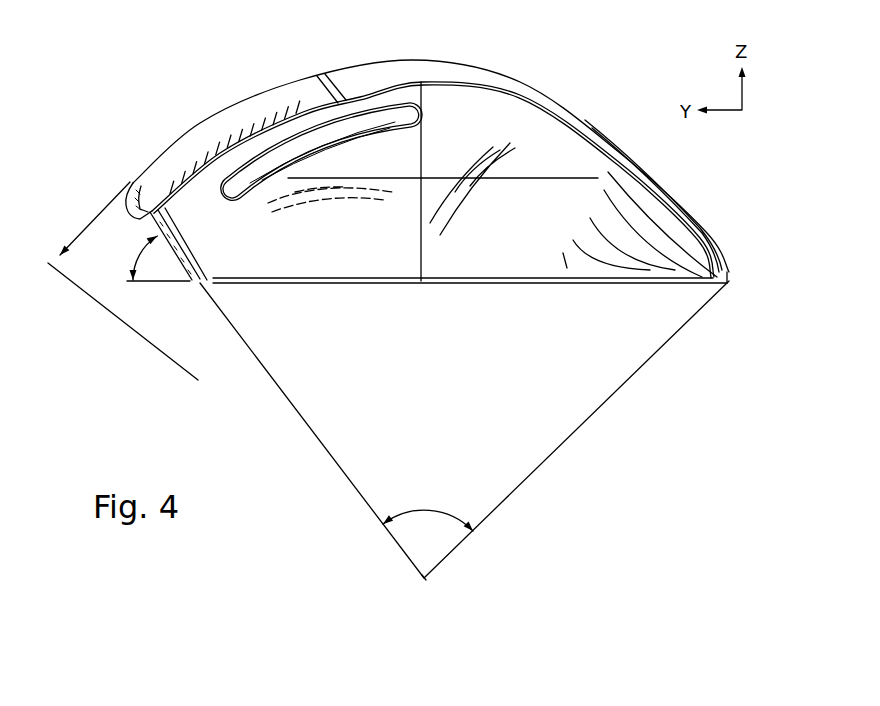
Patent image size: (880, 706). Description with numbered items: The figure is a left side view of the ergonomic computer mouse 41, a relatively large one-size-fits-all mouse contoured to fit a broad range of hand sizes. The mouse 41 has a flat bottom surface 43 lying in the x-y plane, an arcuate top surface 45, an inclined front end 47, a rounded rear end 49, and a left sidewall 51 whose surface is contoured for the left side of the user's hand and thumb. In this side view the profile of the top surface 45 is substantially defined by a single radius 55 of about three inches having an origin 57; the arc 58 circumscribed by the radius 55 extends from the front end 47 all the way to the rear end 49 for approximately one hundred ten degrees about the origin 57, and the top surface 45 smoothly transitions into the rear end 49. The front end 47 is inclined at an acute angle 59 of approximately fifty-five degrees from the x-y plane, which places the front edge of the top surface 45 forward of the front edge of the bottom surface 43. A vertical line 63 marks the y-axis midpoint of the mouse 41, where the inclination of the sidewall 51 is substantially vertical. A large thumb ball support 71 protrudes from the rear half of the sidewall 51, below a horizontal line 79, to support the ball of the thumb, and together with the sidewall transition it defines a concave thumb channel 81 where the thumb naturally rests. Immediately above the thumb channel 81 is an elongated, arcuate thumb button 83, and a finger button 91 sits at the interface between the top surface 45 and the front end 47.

The ergonomic computer mouse 41 is at (170, 70).
The bottom surface 43 is at (375, 285).
The top surface 45 is at (432, 70).
The front end 47 is at (135, 219).
The rear end 49 is at (708, 236).
The left sidewall 51 is at (452, 105).
The radius 55 is at (153, 344).
The origin 57 is at (422, 578).
The arc 58 is at (428, 504).
The acute angle 59 is at (125, 231).
The vertical line 63 is at (423, 143).
The thumb ball support 71 is at (575, 243).
The horizontal line 79 is at (538, 177).
The thumb channel 81 is at (335, 210).
The thumb button 83 is at (320, 135).
The finger button 91 is at (197, 147).